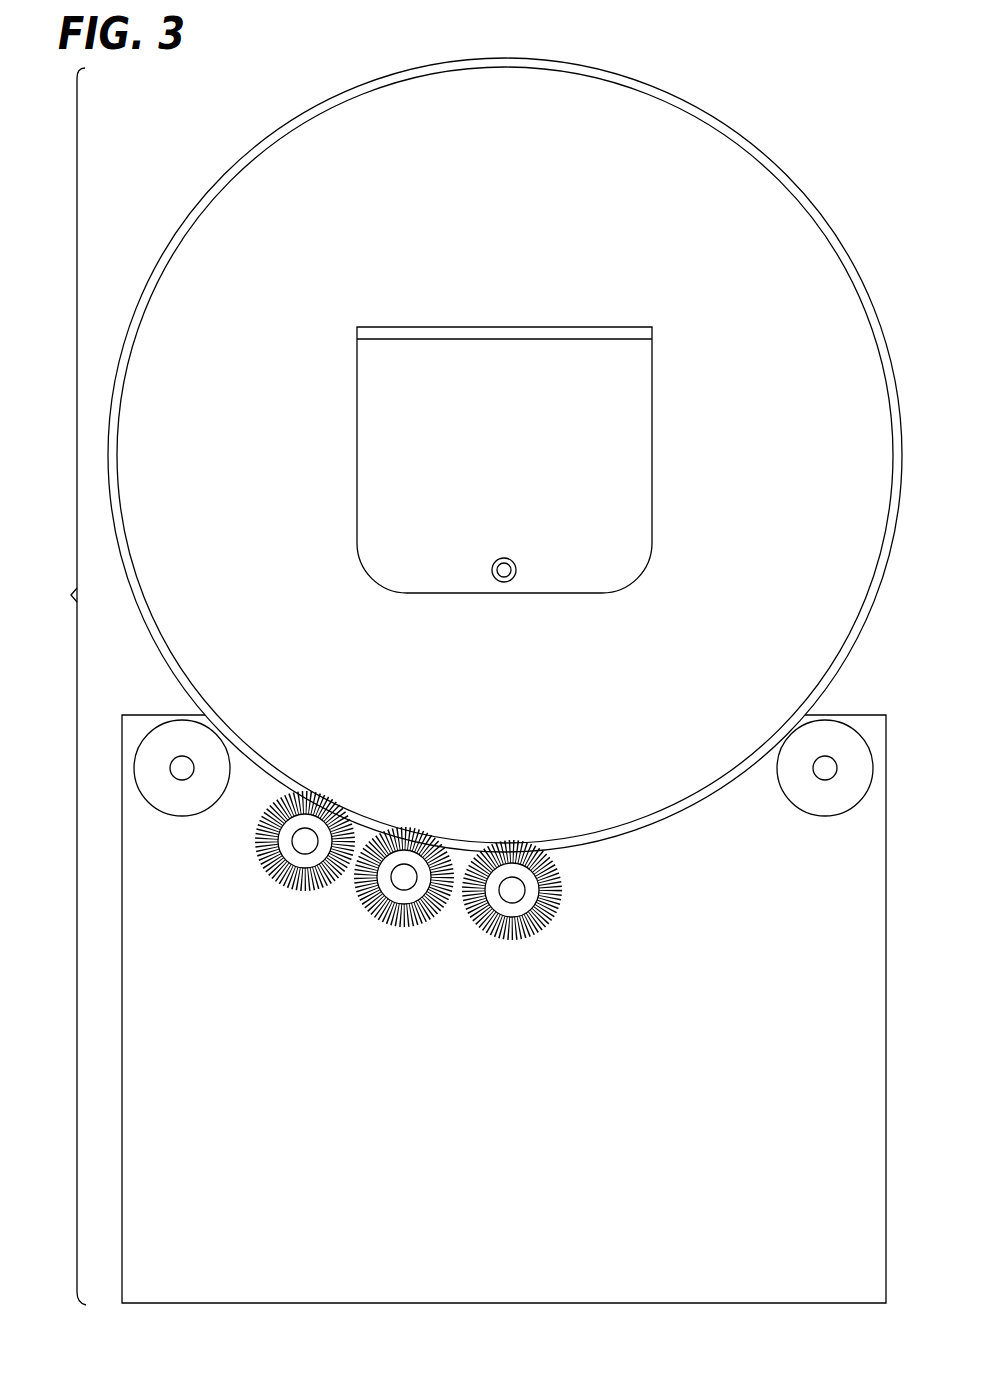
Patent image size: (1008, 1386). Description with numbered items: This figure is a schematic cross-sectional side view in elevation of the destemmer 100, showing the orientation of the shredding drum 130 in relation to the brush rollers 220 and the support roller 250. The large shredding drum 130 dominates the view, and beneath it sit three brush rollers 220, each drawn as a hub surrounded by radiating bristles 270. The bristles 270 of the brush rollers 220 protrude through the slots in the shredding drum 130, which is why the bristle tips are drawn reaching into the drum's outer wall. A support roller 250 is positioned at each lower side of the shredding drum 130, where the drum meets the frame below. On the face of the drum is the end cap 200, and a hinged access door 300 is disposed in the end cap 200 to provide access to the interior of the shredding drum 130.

The destemmer 100 is at (57, 686).
The shredding drum 130 is at (325, 100).
The end cap 200 is at (247, 187).
The hinged access door 300 is at (618, 442).
The support roller 250 is at (182, 742).
The brush rollers 220 is at (369, 906).
The bristles 270 is at (473, 931).